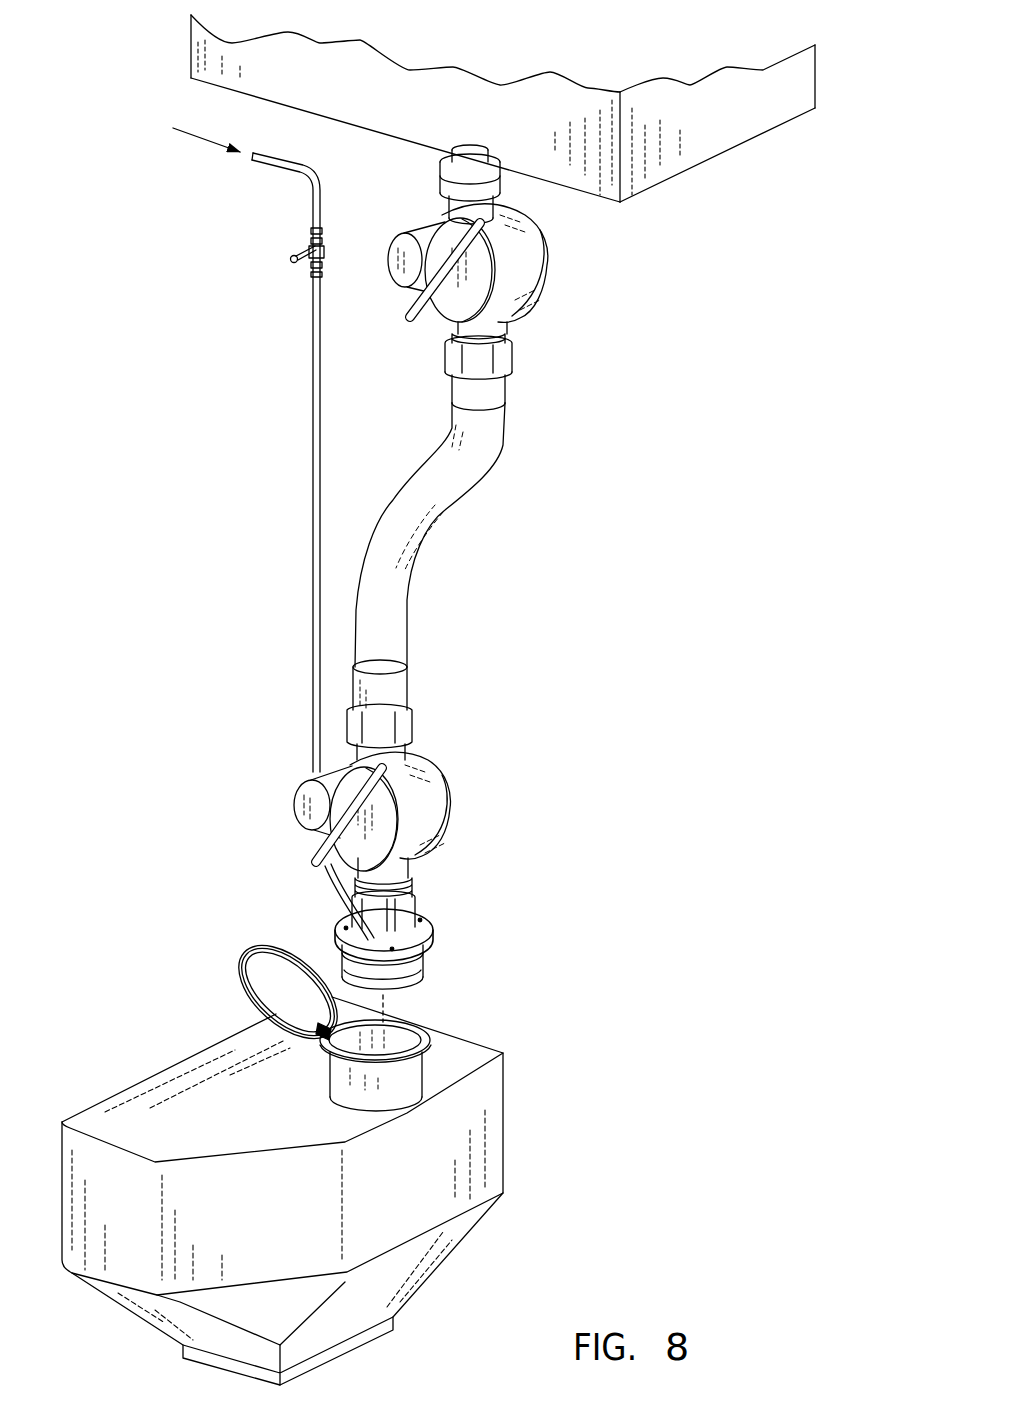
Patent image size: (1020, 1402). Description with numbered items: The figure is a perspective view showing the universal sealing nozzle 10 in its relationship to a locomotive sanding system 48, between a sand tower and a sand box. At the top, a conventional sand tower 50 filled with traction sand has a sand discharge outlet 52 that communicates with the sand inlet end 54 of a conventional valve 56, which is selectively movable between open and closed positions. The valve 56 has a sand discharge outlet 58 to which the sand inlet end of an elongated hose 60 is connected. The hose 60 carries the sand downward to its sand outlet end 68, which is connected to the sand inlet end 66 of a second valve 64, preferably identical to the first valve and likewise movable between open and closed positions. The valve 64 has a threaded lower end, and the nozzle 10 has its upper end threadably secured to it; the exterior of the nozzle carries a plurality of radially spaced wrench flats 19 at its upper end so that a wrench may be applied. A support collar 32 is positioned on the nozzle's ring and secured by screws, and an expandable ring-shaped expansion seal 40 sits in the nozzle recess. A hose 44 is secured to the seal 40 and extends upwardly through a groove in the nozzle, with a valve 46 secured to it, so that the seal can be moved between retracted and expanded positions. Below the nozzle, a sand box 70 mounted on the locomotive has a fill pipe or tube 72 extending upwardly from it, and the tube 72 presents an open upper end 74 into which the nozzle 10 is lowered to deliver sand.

The universal sealing nozzle 10 is at (406, 926).
The wrench flats 19 is at (405, 908).
The support collar 32 is at (326, 925).
The expansion seal 40 is at (420, 966).
The hose 44 is at (273, 534).
The valve 46 is at (287, 241).
The locomotive sanding system 48 is at (503, 531).
The sand tower 50 is at (676, 70).
The sand discharge outlet 52 is at (492, 190).
The sand inlet end 54 is at (449, 289).
The valve 56 is at (430, 324).
The sand discharge outlet 58 is at (508, 343).
The elongated hose 60 is at (484, 443).
The valve 64 is at (444, 777).
The sand inlet end 66 is at (395, 754).
The sand outlet end 68 is at (416, 700).
The sand box 70 is at (349, 1156).
The fill pipe or tube 72 is at (432, 1062).
The open upper end 74 is at (340, 1008).